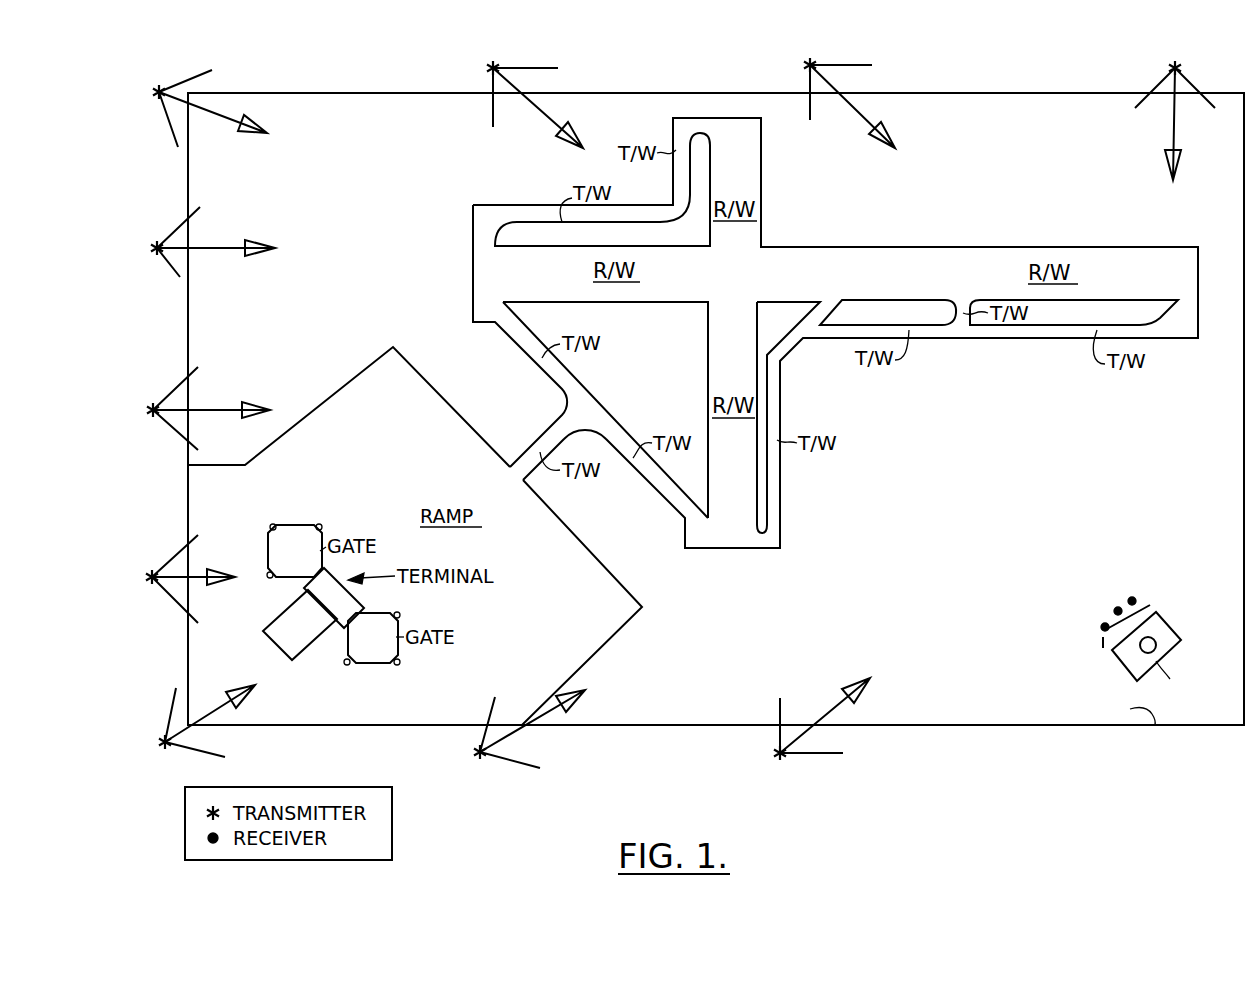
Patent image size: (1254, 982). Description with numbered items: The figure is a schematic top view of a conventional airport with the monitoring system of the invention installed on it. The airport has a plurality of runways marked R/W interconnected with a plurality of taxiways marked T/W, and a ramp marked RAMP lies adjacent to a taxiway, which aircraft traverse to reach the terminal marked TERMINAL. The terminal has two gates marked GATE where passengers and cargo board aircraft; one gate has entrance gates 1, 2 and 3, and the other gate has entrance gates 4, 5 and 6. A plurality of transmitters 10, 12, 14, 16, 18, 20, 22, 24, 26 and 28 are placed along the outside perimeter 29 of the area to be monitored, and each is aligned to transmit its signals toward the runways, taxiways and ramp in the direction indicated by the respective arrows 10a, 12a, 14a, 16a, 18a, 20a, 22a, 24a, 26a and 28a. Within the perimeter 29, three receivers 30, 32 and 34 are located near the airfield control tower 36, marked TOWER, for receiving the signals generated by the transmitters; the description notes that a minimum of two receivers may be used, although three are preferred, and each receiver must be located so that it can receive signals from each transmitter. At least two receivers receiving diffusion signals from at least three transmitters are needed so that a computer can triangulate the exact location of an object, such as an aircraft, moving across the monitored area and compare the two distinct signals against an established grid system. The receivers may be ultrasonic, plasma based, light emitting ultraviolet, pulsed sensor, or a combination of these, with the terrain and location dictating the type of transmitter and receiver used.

The entrance gate 1 is at (264, 582).
The entrance gate 2 is at (265, 521).
The entrance gate 3 is at (327, 520).
The entrance gate 4 is at (339, 672).
The entrance gate 5 is at (405, 674).
The entrance gate 6 is at (405, 606).
The transmitter 10 is at (781, 760).
The arrow 10a is at (840, 700).
The transmitter 12 is at (480, 760).
The arrow 12a is at (556, 708).
The transmitter 14 is at (165, 748).
The arrow 14a is at (225, 705).
The transmitter 16 is at (152, 582).
The arrow 16a is at (197, 577).
The transmitter 18 is at (153, 405).
The arrow 18a is at (215, 410).
The transmitter 20 is at (155, 249).
The arrow 20a is at (222, 247).
The transmitter 22 is at (160, 97).
The arrow 22a is at (222, 120).
The transmitter 24 is at (497, 66).
The arrow 24a is at (548, 118).
The transmitter 26 is at (806, 66).
The arrow 26a is at (870, 120).
The transmitter 28 is at (1168, 70).
The arrow 28a is at (1172, 118).
The outside perimeter 29 is at (966, 726).
The receiver 30 is at (1133, 600).
The receiver 32 is at (1118, 608).
The receiver 34 is at (1100, 627).
The airfield control tower 36 is at (1122, 657).